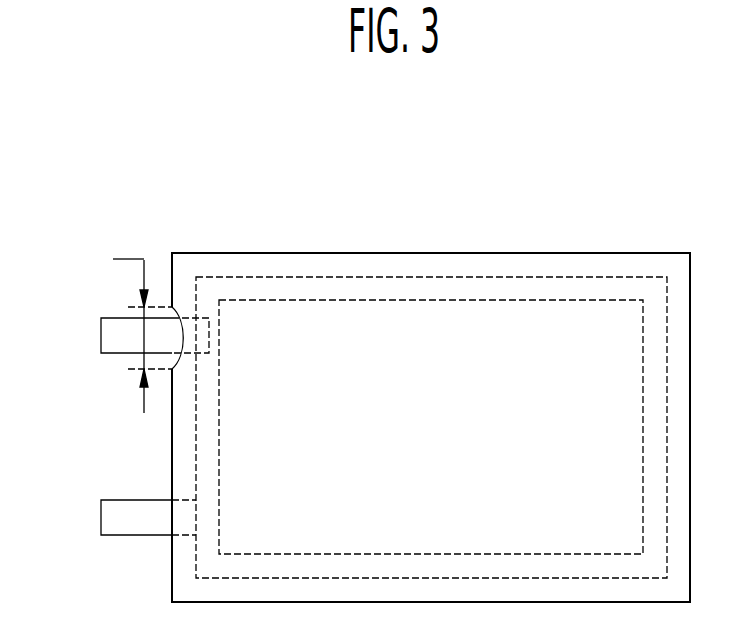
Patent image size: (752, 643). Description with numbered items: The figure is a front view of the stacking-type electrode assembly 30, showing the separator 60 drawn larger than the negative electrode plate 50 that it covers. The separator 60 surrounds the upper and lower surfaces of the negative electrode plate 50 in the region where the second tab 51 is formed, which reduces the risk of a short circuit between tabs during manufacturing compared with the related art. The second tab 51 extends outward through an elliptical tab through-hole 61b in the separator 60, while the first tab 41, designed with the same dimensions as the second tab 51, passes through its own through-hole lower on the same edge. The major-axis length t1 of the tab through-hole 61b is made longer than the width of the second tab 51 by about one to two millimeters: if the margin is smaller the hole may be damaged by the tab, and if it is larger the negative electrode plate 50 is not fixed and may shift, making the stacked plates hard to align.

The secondary battery cell 30 is at (612, 160).
The separator 60 is at (432, 253).
The negative electrode plate 50 is at (573, 277).
The tab through-hole 61b is at (174, 307).
The length of the major axis of the tab through-hole t1 is at (130, 322).
The second tab 51 is at (108, 337).
The first tab 41 is at (108, 522).